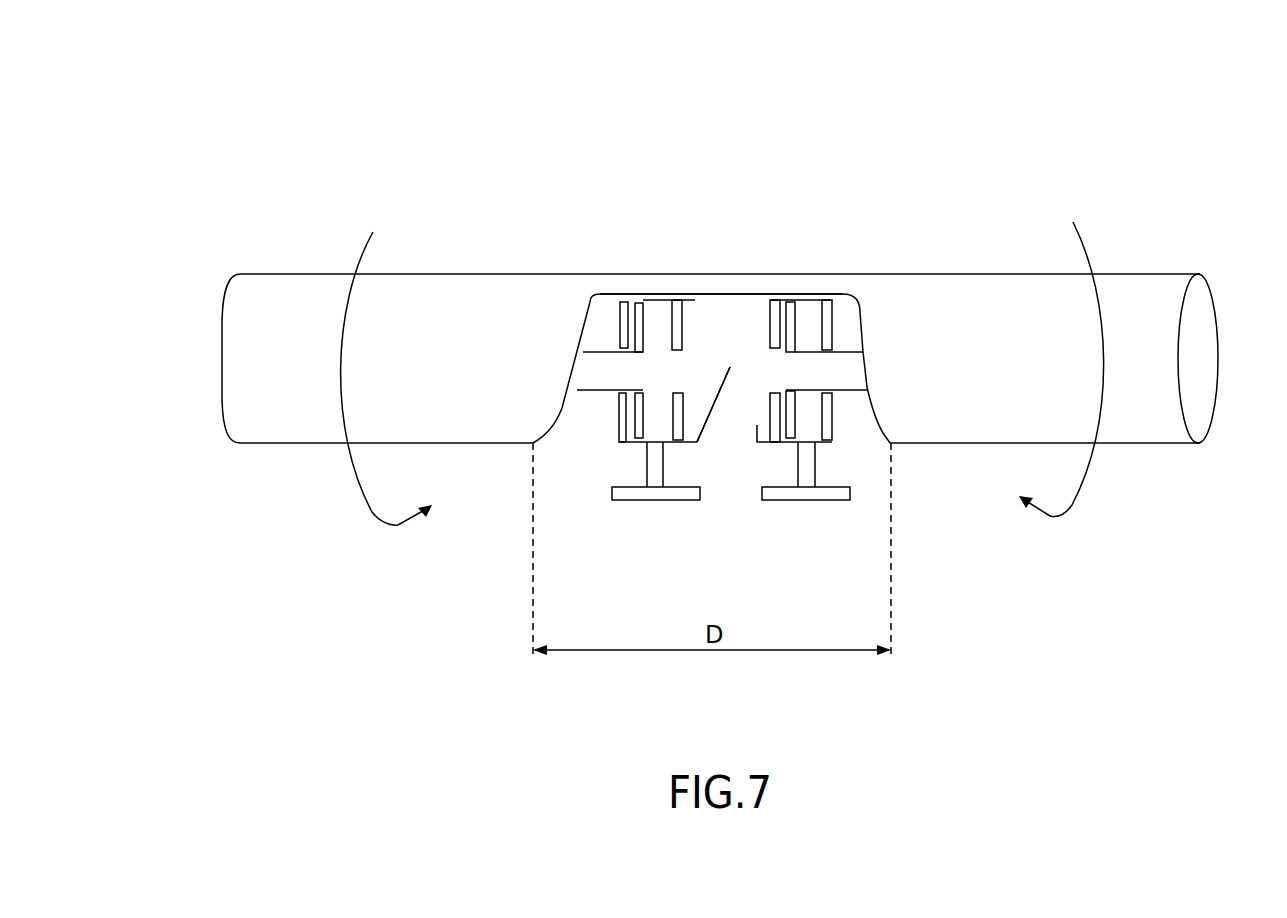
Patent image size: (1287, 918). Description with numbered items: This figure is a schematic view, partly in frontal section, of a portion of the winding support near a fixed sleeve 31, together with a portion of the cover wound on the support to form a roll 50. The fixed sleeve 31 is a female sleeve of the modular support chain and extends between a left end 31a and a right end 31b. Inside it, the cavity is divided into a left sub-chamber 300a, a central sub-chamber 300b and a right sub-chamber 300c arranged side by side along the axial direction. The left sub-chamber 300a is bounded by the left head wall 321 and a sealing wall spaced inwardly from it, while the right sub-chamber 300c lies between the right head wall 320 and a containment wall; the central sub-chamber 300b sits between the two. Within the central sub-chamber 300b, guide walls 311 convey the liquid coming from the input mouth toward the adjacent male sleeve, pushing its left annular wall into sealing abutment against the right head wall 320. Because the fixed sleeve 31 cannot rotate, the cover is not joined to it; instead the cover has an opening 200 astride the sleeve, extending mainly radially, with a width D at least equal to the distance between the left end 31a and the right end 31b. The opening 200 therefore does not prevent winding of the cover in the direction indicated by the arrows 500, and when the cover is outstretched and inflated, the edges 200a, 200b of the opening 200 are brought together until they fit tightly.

The roll 50 is at (263, 313).
The arrows indicating winding direction 500 is at (363, 247).
The opening 200 is at (861, 436).
The edge of the opening 200a is at (562, 406).
The edge of the opening 200b is at (867, 376).
The fixed sleeve 31 is at (695, 284).
The left end of the fixed sleeve 31a is at (610, 325).
The right end of the fixed sleeve 31b is at (849, 329).
The left sub-chamber 300a is at (657, 313).
The central sub-chamber 300b is at (725, 317).
The right sub-chamber 300c is at (812, 312).
The guide walls 311 is at (728, 368).
The right head wall 320 is at (817, 431).
The left head wall 321 is at (630, 433).